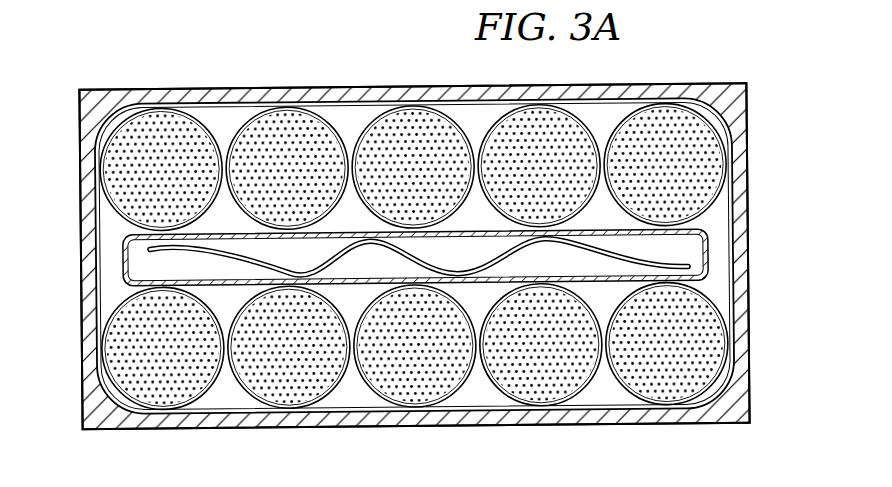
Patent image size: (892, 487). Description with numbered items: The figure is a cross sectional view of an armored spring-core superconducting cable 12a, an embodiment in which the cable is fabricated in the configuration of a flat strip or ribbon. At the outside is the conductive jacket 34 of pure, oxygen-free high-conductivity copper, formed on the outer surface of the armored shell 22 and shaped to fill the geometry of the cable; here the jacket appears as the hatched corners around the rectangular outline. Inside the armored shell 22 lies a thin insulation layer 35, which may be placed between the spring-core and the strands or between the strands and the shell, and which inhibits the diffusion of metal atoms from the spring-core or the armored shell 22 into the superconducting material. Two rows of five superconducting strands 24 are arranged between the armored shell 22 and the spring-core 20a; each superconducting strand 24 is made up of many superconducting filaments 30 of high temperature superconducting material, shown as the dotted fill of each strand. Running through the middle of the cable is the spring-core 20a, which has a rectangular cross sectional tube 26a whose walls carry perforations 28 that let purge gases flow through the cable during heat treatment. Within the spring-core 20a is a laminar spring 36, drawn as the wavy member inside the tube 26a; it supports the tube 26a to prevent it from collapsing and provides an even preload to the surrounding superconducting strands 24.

The armored spring-core superconducting cable 12a is at (740, 58).
The conductive jacket 34 is at (106, 99).
The armored shell 22 is at (667, 98).
The insulation layer 35 is at (231, 107).
The superconducting strand 24 is at (302, 120).
The superconducting filaments 30 is at (406, 118).
The spring-core 20a is at (124, 249).
The perforations 28 is at (312, 238).
The rectangular cross sectional tube 26a is at (703, 248).
The laminar spring 36 is at (602, 250).